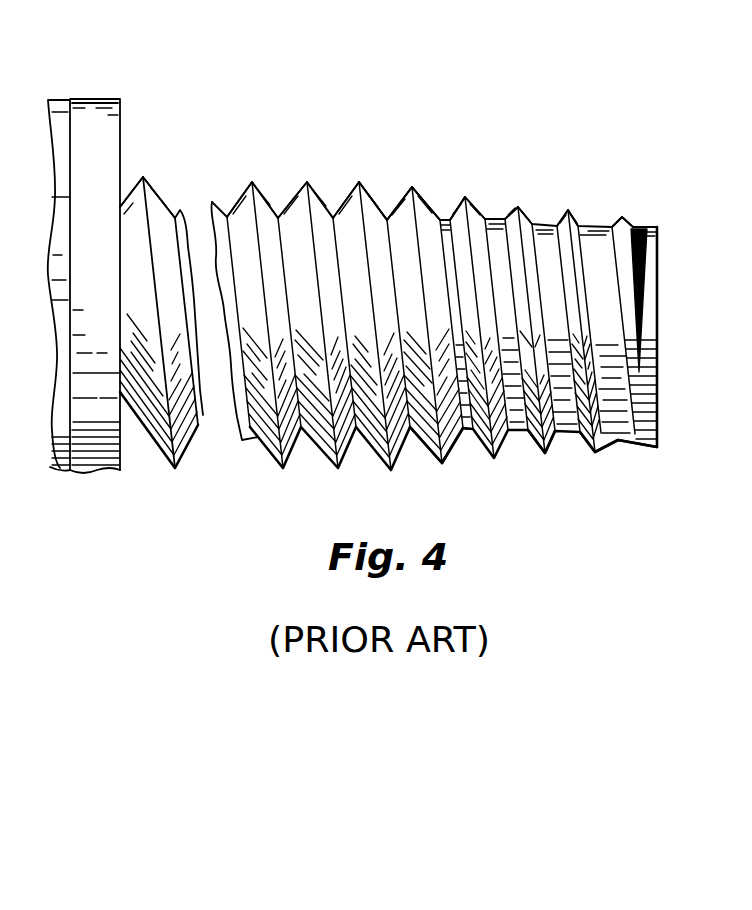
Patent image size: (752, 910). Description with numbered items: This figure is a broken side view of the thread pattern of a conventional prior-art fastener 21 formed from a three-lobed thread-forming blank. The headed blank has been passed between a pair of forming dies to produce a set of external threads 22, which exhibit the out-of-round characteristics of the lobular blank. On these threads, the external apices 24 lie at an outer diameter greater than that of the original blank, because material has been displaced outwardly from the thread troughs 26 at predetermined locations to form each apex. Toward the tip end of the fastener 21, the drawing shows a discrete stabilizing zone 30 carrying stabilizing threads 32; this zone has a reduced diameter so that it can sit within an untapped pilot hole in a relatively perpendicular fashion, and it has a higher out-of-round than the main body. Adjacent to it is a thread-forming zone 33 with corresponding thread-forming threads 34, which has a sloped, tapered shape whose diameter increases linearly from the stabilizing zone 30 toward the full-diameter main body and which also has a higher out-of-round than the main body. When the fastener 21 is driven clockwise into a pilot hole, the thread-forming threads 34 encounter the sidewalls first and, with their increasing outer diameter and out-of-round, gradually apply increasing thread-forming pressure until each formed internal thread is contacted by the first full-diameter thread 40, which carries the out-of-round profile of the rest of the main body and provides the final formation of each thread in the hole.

The fastener 21 is at (355, 270).
The external threads 22 is at (143, 177).
The external apices 24 is at (361, 172).
The thread troughs 26 is at (387, 218).
The first full-diameter thread 40 is at (412, 186).
The thread-forming threads 34 is at (465, 196).
The stabilizing threads 32 is at (568, 209).
The thread-forming zone 33 is at (540, 464).
The stabilizing zone 30 is at (646, 450).